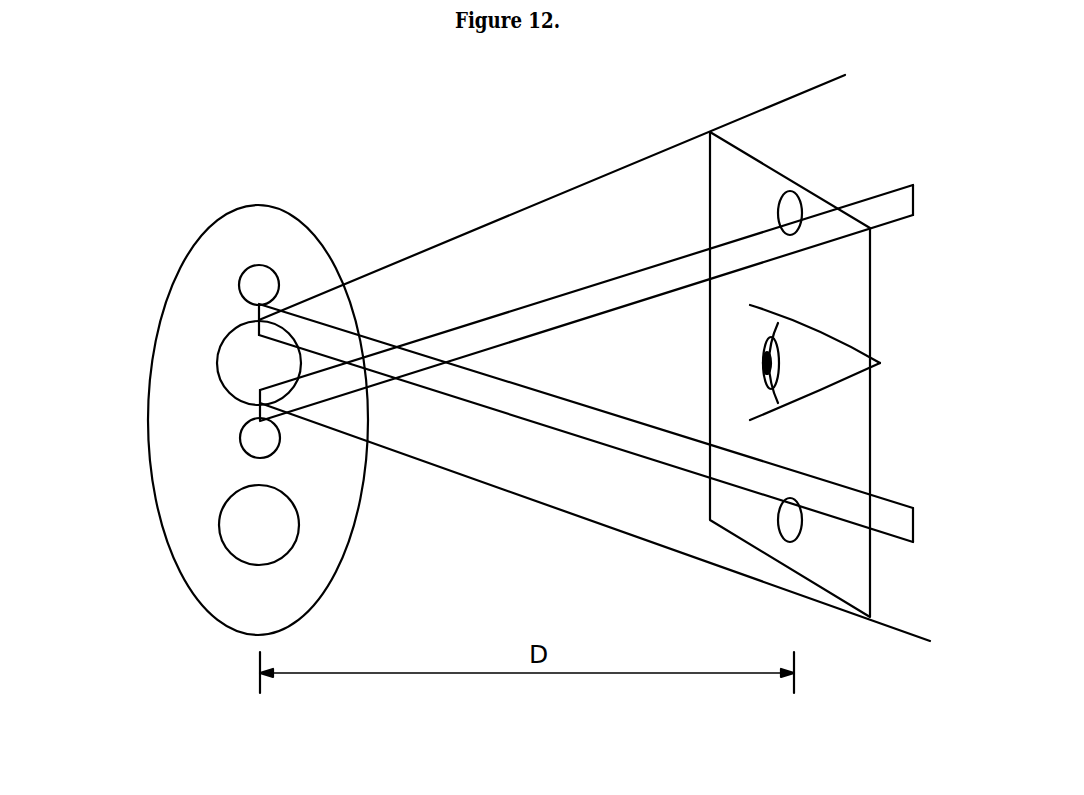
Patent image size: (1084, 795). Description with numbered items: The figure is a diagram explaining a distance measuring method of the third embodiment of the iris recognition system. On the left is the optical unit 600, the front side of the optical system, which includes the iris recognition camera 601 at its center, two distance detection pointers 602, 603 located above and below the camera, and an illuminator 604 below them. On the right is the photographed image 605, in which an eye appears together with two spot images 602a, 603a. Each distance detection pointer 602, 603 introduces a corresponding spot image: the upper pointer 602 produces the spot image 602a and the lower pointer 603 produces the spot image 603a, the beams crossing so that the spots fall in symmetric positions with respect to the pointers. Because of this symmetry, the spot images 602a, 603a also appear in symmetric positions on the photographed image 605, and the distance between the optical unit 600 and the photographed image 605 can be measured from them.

The optical unit 600 is at (300, 217).
The iris recognition camera 601 is at (216, 357).
The distance detection pointer 602 is at (240, 278).
The distance detection pointer 603 is at (243, 440).
The illuminator 604 is at (220, 525).
The spot image 602a is at (787, 532).
The spot image 603a is at (780, 200).
The photographed image 605 is at (807, 190).